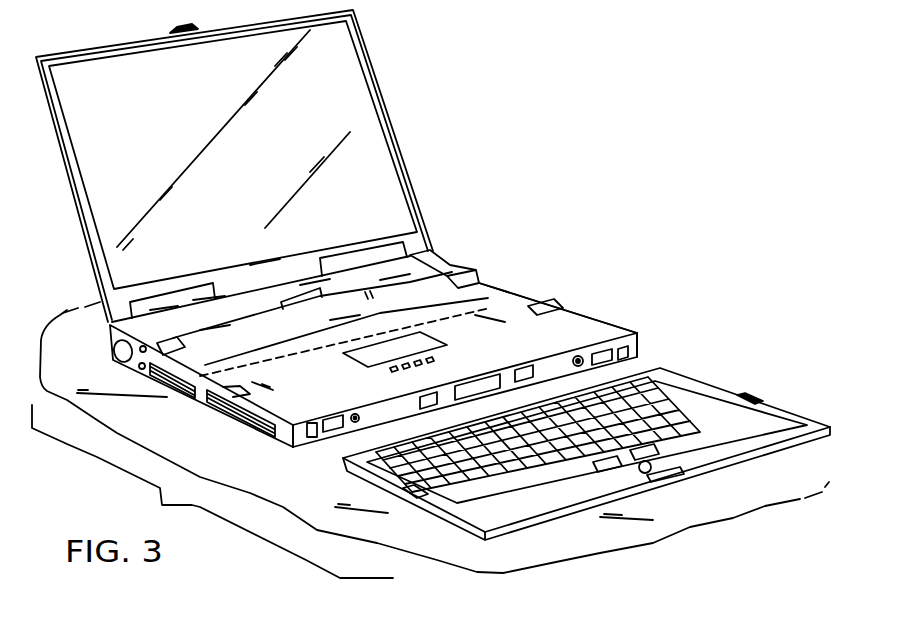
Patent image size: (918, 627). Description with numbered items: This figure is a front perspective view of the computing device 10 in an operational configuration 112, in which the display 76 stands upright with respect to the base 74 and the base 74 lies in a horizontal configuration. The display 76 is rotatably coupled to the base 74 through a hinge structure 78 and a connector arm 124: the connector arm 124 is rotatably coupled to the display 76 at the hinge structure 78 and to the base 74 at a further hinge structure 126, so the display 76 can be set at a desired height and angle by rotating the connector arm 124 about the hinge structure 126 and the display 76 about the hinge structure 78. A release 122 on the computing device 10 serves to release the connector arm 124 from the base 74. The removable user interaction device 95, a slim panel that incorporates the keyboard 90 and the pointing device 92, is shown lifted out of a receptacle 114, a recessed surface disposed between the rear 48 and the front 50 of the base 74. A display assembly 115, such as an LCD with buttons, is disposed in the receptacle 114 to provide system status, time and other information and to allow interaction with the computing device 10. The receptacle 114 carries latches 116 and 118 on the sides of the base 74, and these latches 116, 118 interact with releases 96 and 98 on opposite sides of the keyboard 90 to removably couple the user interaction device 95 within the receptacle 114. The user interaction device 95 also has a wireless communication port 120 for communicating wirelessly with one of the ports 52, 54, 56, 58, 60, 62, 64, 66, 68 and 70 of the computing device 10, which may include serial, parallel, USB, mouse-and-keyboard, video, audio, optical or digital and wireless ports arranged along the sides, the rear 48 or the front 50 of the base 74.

The computing device 10 is at (433, 275).
The operational configuration 112 is at (530, 208).
The rear 48 is at (110, 340).
The front 50 is at (303, 437).
The port 52 is at (140, 369).
The port 54 is at (138, 351).
The port 56 is at (312, 425).
The port 58 is at (330, 417).
The port 60 is at (355, 414).
The port 62 is at (423, 391).
The port 64 is at (522, 370).
The port 66 is at (578, 355).
The port 68 is at (597, 350).
The port 70 is at (630, 351).
The base 74 is at (622, 328).
The display 76 is at (365, 78).
The hinge structure 78 is at (436, 249).
The keyboard 90 is at (697, 385).
The pointing device 92 is at (675, 463).
The removable user interaction device 95 is at (730, 374).
The release 96 is at (407, 494).
The release 98 is at (765, 402).
The receptacle 114 is at (583, 325).
The display assembly 115 is at (443, 335).
The latch 116 is at (233, 390).
The latch 118 is at (555, 306).
The wireless communication port 120 is at (505, 408).
The release 122 is at (293, 300).
The connector arm 124 is at (418, 285).
The hinge structure 126 is at (203, 368).